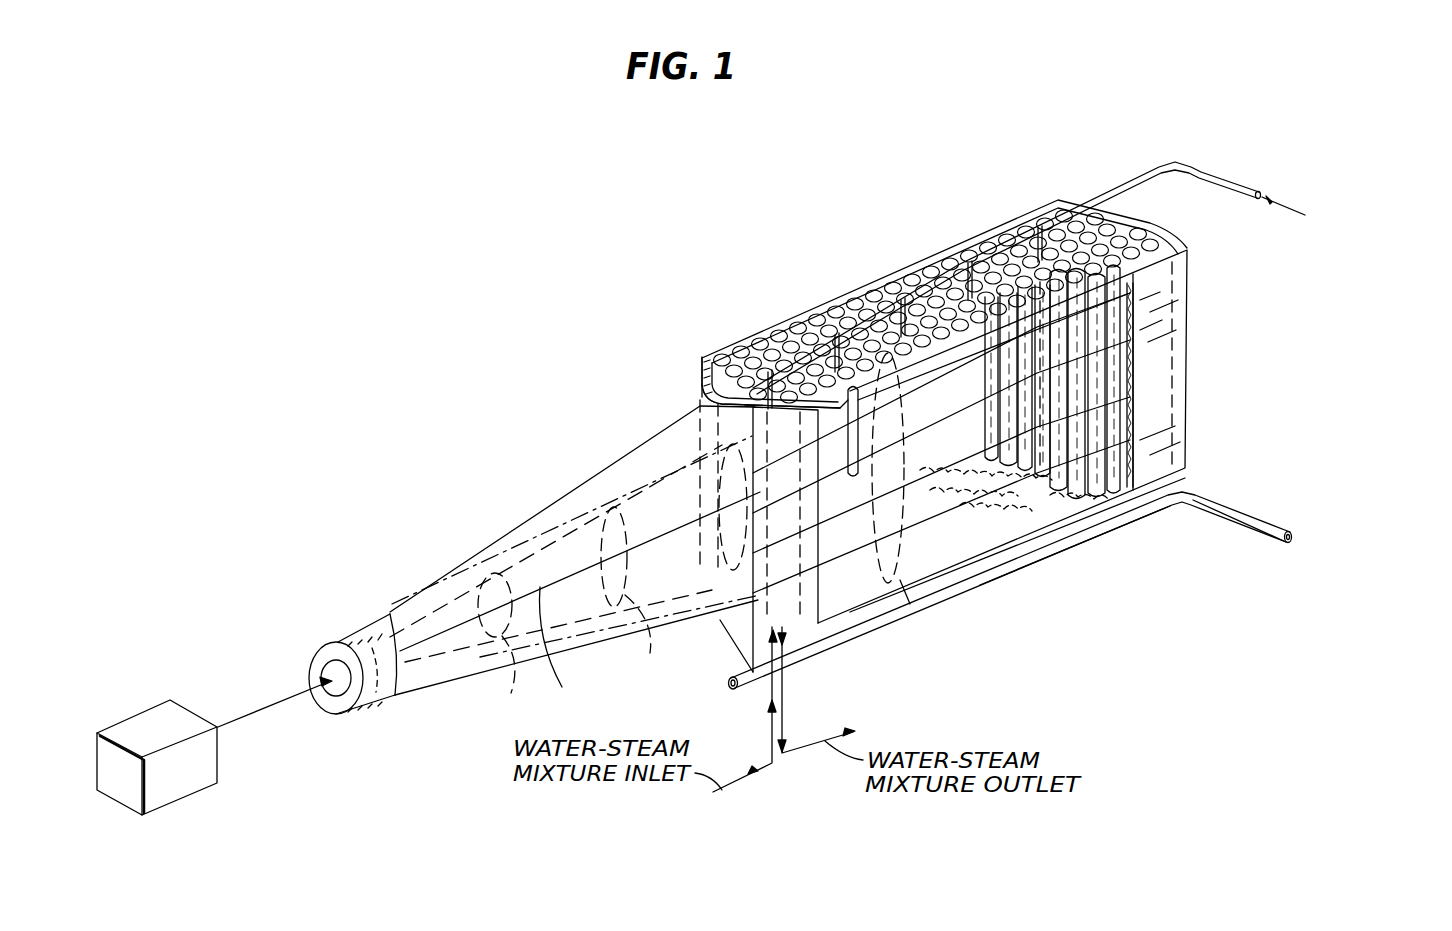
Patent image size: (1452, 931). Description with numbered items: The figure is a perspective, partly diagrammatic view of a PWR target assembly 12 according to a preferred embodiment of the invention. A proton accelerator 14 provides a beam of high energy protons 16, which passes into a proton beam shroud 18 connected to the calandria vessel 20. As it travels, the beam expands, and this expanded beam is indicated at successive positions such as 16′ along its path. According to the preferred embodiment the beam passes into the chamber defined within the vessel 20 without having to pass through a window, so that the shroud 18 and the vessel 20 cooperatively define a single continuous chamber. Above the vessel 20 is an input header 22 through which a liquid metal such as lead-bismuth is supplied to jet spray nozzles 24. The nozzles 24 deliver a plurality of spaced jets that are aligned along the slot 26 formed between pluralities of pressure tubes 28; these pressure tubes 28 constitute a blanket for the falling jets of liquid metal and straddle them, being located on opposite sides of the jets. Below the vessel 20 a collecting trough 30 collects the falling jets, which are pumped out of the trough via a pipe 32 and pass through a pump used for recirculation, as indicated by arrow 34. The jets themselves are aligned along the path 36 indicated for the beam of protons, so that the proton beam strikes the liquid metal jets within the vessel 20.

The target assembly 12 is at (832, 285).
The proton accelerator 14 is at (165, 718).
The beam of high energy protons 16 is at (298, 690).
The expanded beam 16′ is at (510, 644).
The proton beam shroud 18 is at (428, 690).
The calandria vessel 20 is at (1190, 403).
The input header 22 is at (1166, 178).
The jet spray nozzles 24 is at (756, 386).
The slot 26 is at (722, 398).
The pressure tubes 28 is at (970, 248).
The collecting trough 30 is at (748, 614).
The pipe 32 is at (1121, 517).
The arrow 34 is at (1322, 557).
The path 36 is at (547, 605).